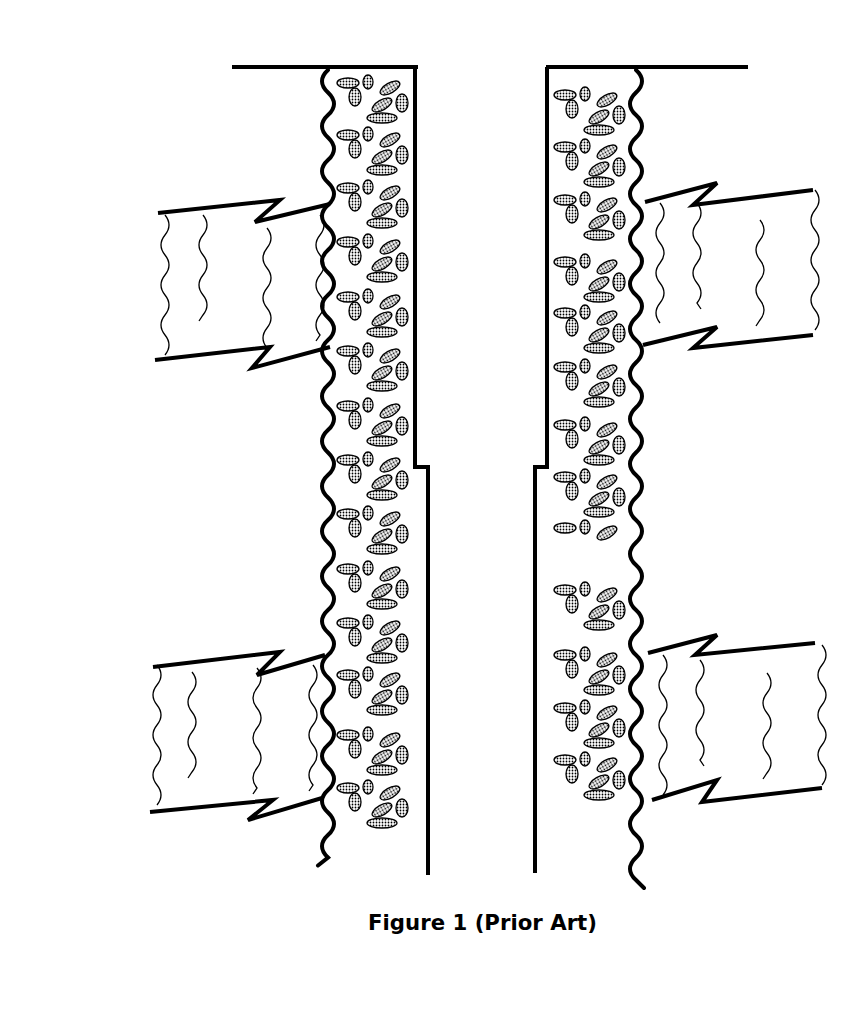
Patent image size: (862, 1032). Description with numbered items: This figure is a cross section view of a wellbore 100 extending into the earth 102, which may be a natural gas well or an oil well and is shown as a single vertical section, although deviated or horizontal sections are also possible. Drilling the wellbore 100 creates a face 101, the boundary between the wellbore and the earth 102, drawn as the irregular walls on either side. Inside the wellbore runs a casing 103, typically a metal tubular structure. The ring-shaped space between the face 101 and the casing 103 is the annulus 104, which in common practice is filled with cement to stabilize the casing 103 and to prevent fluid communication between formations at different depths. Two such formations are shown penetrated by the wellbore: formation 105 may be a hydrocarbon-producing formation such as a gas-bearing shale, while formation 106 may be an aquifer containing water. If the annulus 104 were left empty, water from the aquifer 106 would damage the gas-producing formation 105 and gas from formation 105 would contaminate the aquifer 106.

The wellbore 100 is at (470, 62).
The face 101 is at (642, 483).
The earth 102 is at (731, 226).
The casing 103 is at (418, 243).
The annulus 104 is at (481, 451).
The formation 105 is at (224, 678).
The formation 106 is at (228, 287).